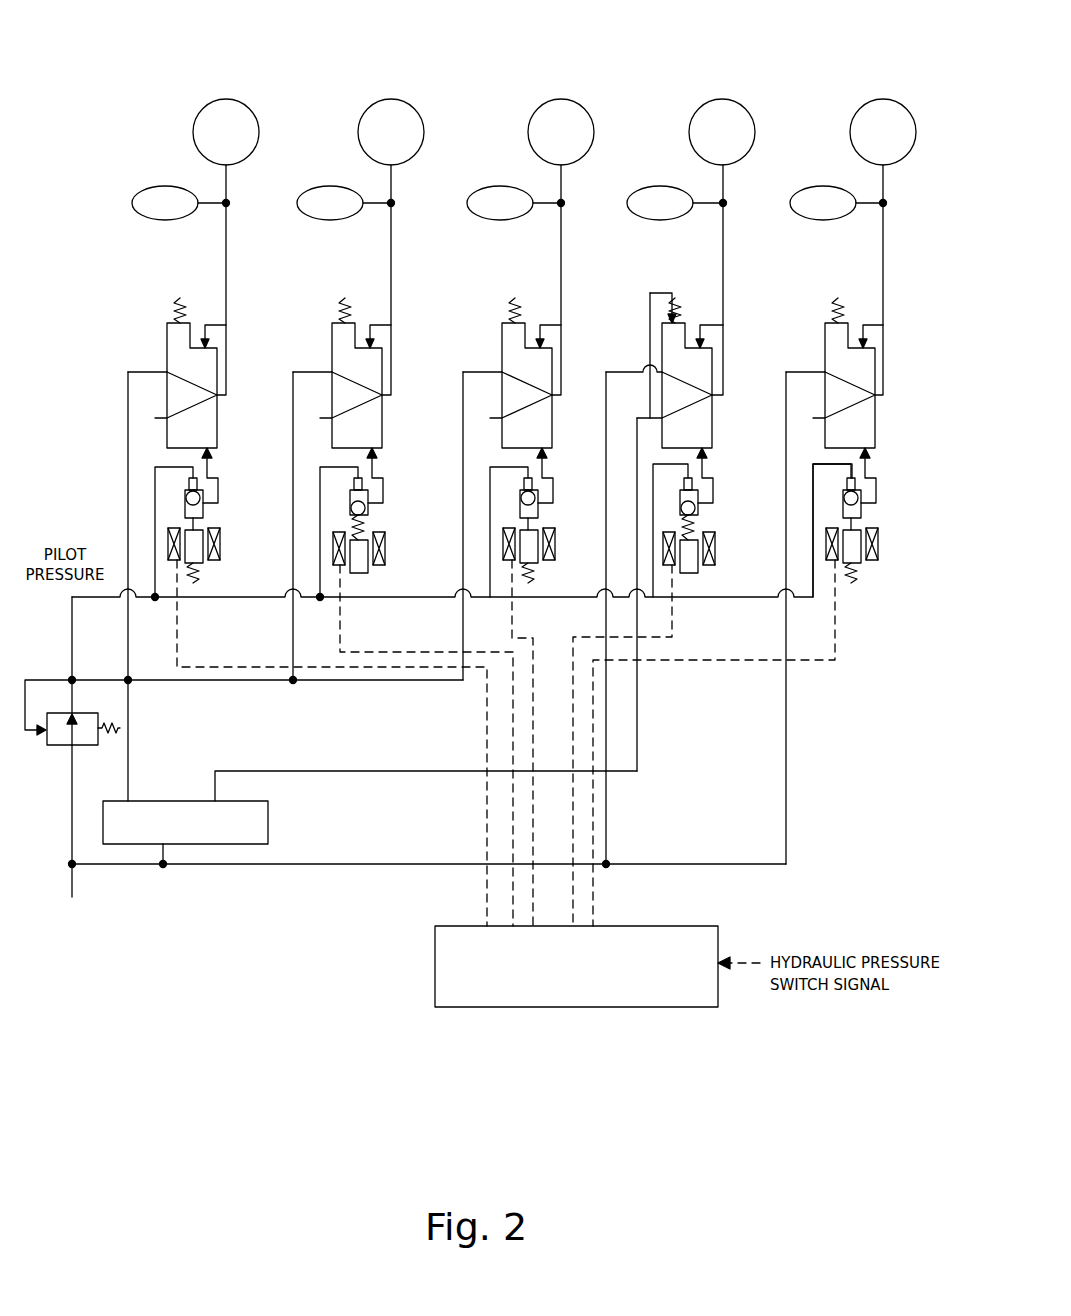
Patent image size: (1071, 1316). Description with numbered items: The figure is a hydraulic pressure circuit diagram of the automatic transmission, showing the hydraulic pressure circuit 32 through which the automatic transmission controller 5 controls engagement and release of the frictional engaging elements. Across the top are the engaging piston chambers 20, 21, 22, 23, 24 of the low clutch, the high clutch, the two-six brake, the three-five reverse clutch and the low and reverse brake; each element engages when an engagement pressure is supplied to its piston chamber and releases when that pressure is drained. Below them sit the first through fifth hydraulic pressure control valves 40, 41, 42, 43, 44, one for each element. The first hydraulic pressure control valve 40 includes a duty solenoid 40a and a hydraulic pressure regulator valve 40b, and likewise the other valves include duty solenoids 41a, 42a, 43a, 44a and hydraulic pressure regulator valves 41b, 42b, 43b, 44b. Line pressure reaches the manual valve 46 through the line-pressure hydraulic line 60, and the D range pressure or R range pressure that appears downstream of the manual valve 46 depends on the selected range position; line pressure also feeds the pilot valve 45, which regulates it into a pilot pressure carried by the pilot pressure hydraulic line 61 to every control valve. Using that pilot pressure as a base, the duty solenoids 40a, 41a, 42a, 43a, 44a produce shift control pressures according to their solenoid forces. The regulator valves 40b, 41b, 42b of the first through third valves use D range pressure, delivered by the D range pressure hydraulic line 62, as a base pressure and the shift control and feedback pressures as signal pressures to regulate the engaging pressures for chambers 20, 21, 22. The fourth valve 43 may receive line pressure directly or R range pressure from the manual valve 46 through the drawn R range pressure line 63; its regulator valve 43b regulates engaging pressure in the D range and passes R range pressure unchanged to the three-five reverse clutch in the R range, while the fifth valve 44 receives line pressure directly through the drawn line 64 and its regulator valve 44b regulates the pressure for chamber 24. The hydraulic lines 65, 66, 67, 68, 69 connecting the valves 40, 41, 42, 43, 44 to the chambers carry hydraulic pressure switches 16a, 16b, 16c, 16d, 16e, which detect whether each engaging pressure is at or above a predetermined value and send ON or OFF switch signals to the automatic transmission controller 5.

The automatic transmission controller 5 is at (660, 926).
The hydraulic pressure switch 16a is at (162, 184).
The hydraulic pressure switch 16b is at (328, 184).
The hydraulic pressure switch 16c is at (498, 184).
The hydraulic pressure switch 16d is at (657, 184).
The hydraulic pressure switch 16e is at (818, 184).
The engaging piston chamber 20 is at (210, 114).
The engaging piston chamber 21 is at (375, 114).
The engaging piston chamber 22 is at (545, 114).
The engaging piston chamber 23 is at (705, 114).
The engaging piston chamber 24 is at (866, 114).
The hydraulic pressure circuit 32 is at (769, 72).
The first hydraulic pressure control valve 40 is at (177, 355).
The duty solenoid 40a is at (143, 514).
The hydraulic pressure regulator valve 40b is at (141, 308).
The second hydraulic pressure control valve 41 is at (342, 355).
The duty solenoid 41a is at (308, 514).
The hydraulic pressure regulator valve 41b is at (306, 308).
The third hydraulic pressure control valve 42 is at (512, 355).
The duty solenoid 42a is at (478, 512).
The hydraulic pressure regulator valve 42b is at (476, 308).
The fourth hydraulic pressure control valve 43 is at (664, 348).
The duty solenoid 43a is at (638, 510).
The hydraulic pressure regulator valve 43b is at (631, 304).
The fifth hydraulic pressure control valve 44 is at (834, 350).
The duty solenoid 44a is at (802, 511).
The hydraulic pressure regulator valve 44b is at (799, 308).
The pilot valve 45 is at (93, 710).
The manual valve 46 is at (268, 820).
The line-pressure hydraulic line 60 is at (84, 862).
The pilot pressure hydraulic line 61 is at (93, 601).
The D range pressure hydraulic line 62 is at (342, 686).
The R range pressure oil passage 63 is at (382, 774).
The line pressure oil passage 64 is at (788, 731).
The hydraulic line 65 is at (198, 280).
The hydraulic line 66 is at (363, 280).
The hydraulic line 67 is at (533, 280).
The hydraulic line 68 is at (694, 280).
The hydraulic line 69 is at (854, 280).